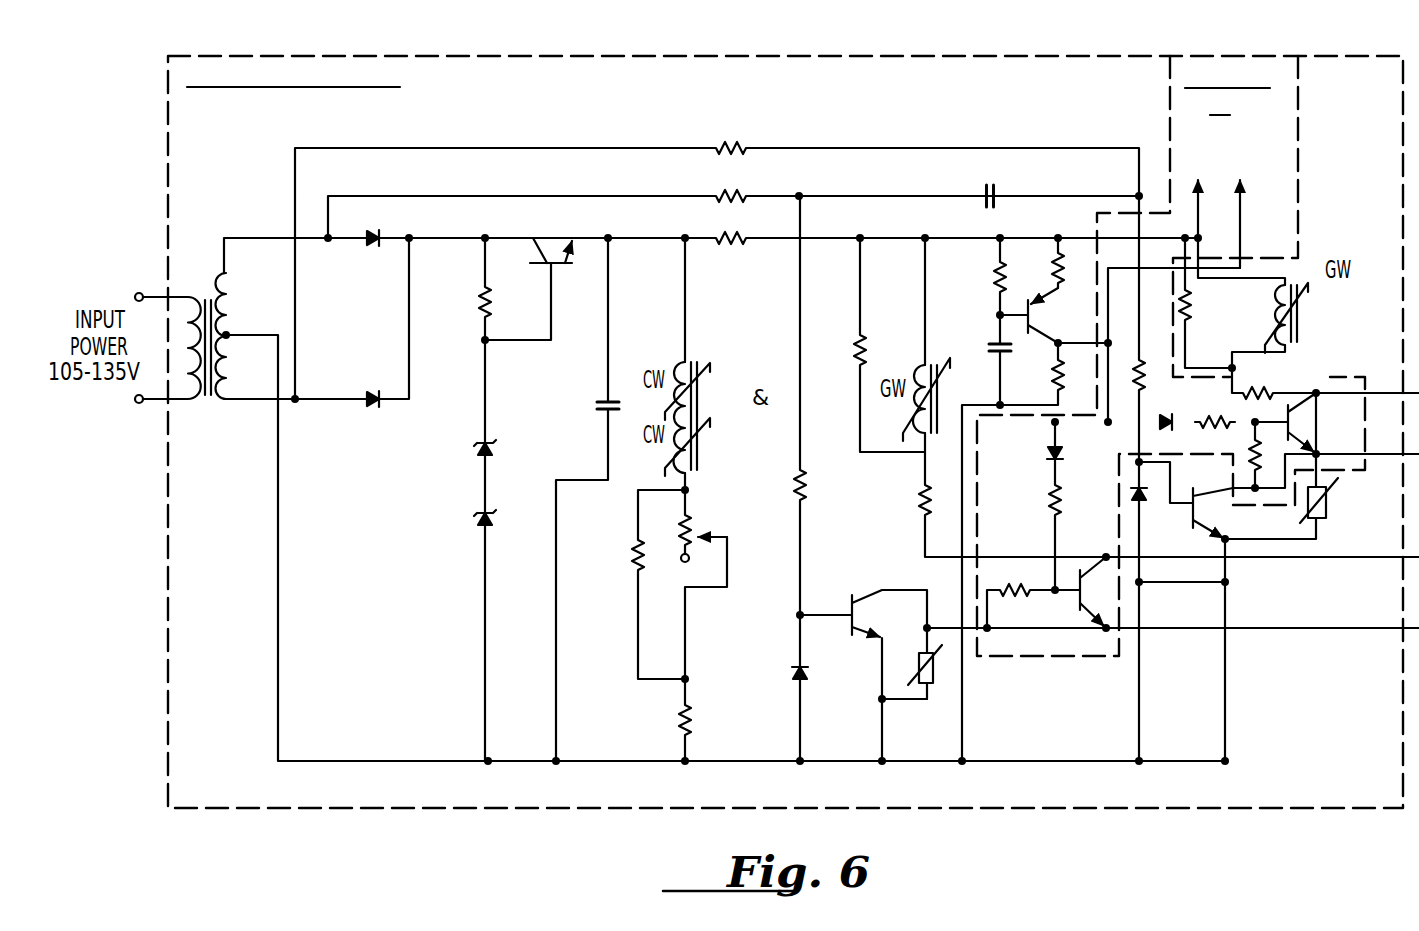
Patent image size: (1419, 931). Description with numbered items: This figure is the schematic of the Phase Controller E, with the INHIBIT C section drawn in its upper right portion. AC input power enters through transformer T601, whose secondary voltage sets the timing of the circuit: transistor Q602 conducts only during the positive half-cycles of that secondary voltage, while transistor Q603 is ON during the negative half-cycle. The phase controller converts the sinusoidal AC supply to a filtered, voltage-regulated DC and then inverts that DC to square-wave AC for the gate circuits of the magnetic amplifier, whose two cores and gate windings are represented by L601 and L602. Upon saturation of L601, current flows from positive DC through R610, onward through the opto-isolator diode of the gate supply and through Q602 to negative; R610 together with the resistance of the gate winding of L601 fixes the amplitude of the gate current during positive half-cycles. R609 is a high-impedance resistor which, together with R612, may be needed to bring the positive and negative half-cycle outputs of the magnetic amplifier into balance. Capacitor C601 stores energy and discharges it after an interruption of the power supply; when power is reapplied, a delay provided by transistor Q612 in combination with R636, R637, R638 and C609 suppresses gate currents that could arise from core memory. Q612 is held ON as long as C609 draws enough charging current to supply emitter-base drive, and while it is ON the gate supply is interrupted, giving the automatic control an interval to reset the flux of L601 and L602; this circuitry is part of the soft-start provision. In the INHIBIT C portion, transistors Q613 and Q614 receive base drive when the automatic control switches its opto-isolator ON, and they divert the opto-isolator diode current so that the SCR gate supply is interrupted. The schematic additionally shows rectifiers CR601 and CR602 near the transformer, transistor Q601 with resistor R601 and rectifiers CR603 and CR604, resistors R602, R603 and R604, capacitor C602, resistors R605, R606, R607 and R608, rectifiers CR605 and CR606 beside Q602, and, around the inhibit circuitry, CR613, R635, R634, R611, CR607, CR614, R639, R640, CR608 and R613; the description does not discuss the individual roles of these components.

The phase controller E is at (160, 122).
The inhibit C is at (1171, 356).
The transformer T601 is at (203, 272).
The rectifier diode CR601 is at (372, 247).
The rectifier diode CR602 is at (378, 374).
The resistor R601 is at (480, 294).
The transistor Q601 is at (548, 250).
The zener diode CR603 is at (478, 452).
The zener diode CR604 is at (478, 522).
The resistor R602 is at (736, 146).
The resistor R603 is at (740, 194).
The resistor R604 is at (734, 247).
The capacitor C601 is at (598, 398).
The capacitor C602 is at (982, 192).
The magnetic amplifier core with gate winding L601 is at (700, 392).
The magnetic amplifier core with gate winding L602 is at (705, 452).
The potentiometer R605 is at (694, 524).
The resistor R606 is at (632, 545).
The resistor R607 is at (680, 718).
The resistor R608 is at (806, 494).
The high impedance resistor R609 is at (855, 350).
The resistor R610 is at (918, 494).
The diode CR605 is at (792, 673).
The transistor Q602 is at (849, 602).
The silicon controlled rectifier CR606 is at (938, 690).
The resistor R636 is at (992, 290).
The resistor R637 is at (1053, 252).
The transistor Q612 is at (1035, 318).
The capacitor C609 is at (997, 346).
The resistor R638 is at (1056, 400).
The diode CR613 is at (1049, 454).
The resistor R635 is at (1050, 512).
The resistor R634 is at (1003, 590).
The transistor Q613 is at (1090, 568).
The resistor R611 is at (1146, 364).
The diode CR607 is at (1126, 496).
The diode CR614 is at (1162, 430).
The resistor R639 is at (1236, 418).
The resistor R640 is at (1250, 460).
The transistor Q603 is at (1190, 514).
The silicon controlled rectifier CR608 is at (1328, 520).
The resistor R612 is at (1192, 304).
The resistor R613 is at (1282, 392).
The transistor Q614 is at (1300, 420).